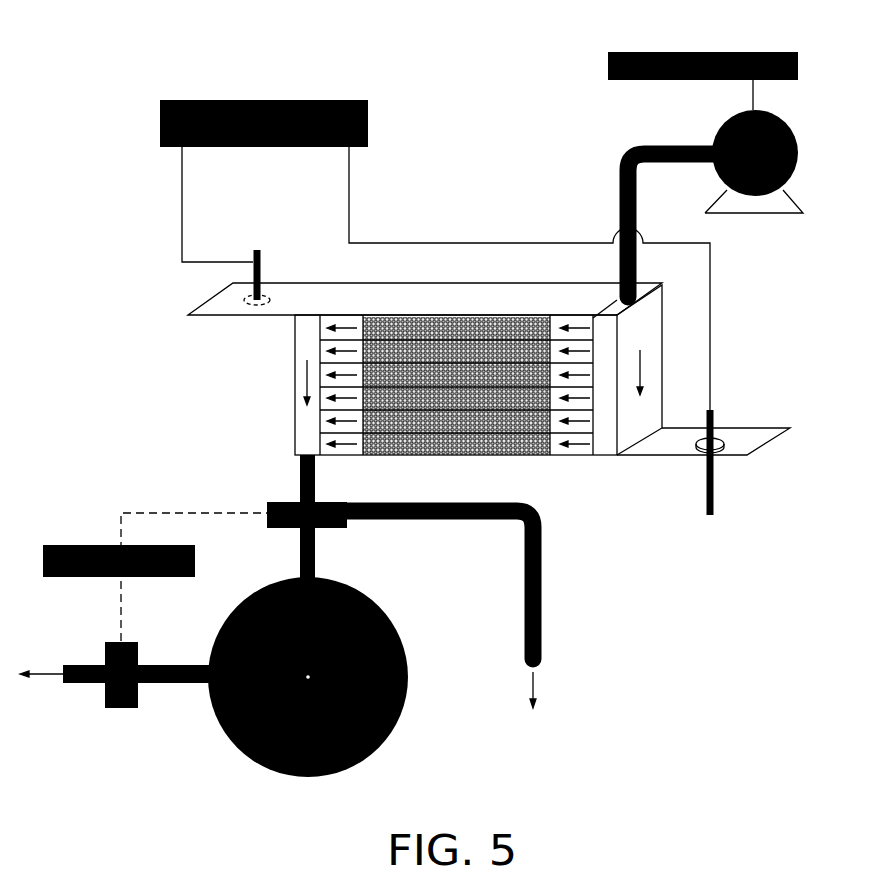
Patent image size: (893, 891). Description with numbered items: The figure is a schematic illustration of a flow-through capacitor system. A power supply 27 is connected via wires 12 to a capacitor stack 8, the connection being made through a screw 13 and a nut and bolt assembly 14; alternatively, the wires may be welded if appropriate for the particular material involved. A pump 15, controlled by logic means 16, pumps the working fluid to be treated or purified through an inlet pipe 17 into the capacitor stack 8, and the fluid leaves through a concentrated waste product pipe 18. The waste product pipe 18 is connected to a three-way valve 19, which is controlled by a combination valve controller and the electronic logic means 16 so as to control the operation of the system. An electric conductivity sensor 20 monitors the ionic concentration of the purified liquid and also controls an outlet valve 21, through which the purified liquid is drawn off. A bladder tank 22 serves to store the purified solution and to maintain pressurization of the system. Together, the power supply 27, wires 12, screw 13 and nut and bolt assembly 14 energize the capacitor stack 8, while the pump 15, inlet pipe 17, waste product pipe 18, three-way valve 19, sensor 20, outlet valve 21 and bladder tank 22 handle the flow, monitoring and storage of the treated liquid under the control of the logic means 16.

The capacitor stack 8 is at (222, 320).
The wires 12 is at (195, 250).
The screw 13 is at (263, 283).
The nut and bolt assembly 14 is at (722, 450).
The pump 15 is at (796, 135).
The logic means 16 is at (655, 52).
The inlet pipe 17 is at (624, 152).
The concentrated waste product pipe 18 is at (489, 503).
The three-way valve 19 is at (290, 530).
The electric conductivity sensor 20 is at (100, 545).
The outlet valve 21 is at (120, 712).
The bladder tank 22 is at (405, 729).
The power supply 27 is at (248, 100).